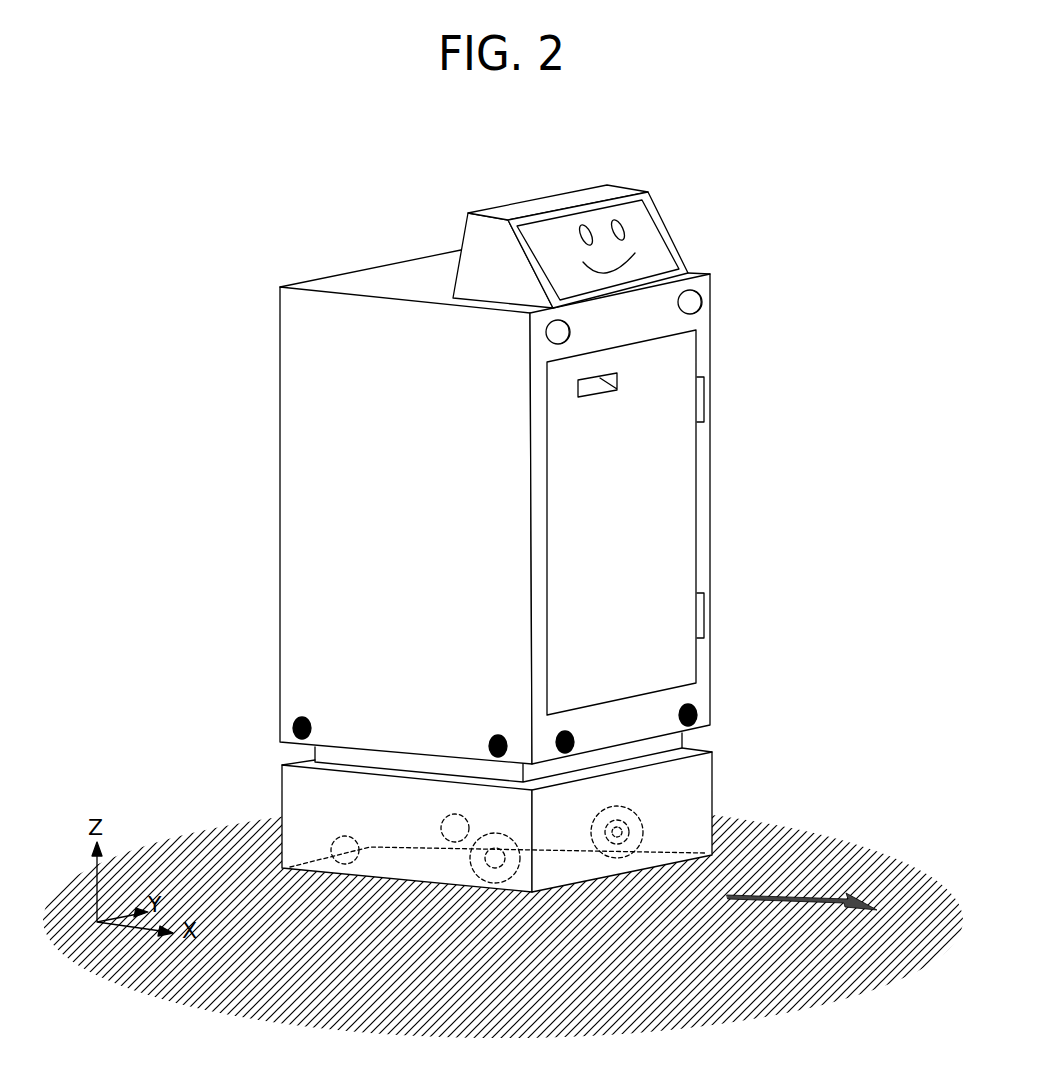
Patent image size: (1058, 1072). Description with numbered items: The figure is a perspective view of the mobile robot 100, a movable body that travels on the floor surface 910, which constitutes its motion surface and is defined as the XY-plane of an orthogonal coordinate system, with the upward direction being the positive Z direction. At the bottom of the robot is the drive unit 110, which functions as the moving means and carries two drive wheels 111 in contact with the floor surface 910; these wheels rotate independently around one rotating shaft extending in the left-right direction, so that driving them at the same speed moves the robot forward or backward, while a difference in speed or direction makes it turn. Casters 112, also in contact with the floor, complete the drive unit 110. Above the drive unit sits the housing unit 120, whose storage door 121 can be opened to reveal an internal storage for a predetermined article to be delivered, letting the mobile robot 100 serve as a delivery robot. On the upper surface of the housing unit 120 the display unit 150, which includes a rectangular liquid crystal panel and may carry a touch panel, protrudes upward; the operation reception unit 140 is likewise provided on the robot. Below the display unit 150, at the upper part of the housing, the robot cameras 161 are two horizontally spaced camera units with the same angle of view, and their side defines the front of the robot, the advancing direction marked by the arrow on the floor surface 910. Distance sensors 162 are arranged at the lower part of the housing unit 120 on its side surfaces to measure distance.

The mobile robot 100 is at (265, 239).
The drive unit 110 is at (565, 757).
The drive wheels 111 is at (653, 810).
The casters 112 is at (333, 843).
The housing unit 120 is at (547, 505).
The storage door 121 is at (668, 470).
The operation reception unit 140 is at (619, 226).
The display unit 150 is at (662, 260).
The robot cameras 161 is at (702, 303).
The distance sensors 162 is at (293, 725).
The floor surface 910 is at (805, 840).